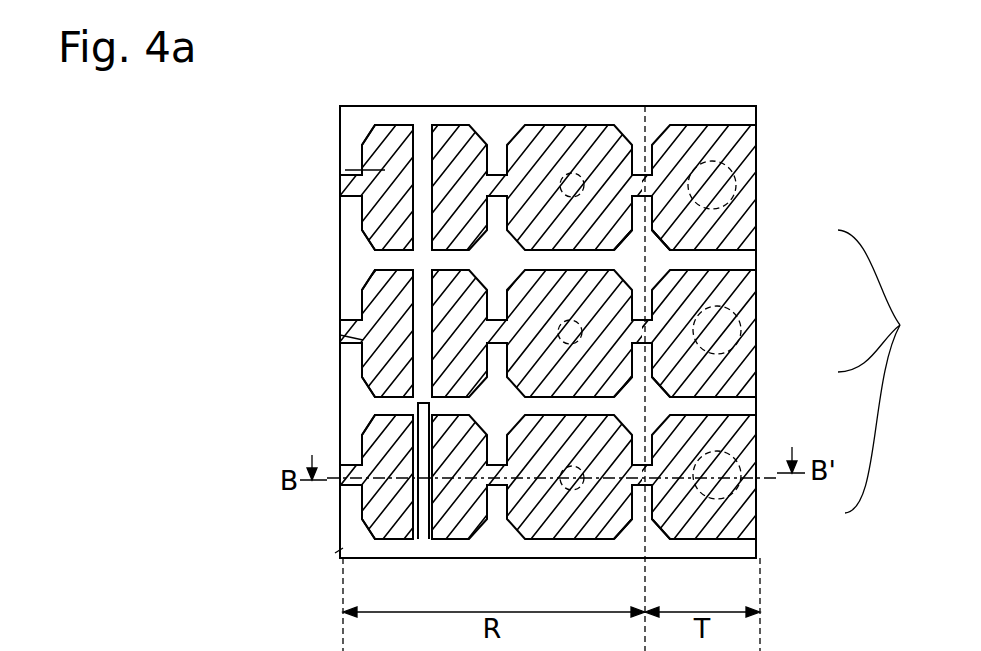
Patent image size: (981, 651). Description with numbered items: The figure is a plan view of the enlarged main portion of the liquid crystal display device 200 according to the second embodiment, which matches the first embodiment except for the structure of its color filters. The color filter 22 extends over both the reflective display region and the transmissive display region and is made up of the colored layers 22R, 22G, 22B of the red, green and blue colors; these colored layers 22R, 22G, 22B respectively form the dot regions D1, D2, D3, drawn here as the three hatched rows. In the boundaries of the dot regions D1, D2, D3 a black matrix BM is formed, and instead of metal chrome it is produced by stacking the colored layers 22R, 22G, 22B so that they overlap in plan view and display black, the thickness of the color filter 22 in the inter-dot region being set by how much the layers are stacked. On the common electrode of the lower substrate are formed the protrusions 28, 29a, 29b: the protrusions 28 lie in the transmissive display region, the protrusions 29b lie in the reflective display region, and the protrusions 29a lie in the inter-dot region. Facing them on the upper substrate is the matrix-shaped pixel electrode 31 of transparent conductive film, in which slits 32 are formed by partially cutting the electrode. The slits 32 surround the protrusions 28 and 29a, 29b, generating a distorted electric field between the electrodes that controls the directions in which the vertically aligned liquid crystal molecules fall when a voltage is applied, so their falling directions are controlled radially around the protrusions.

The liquid crystal display device 200 is at (723, 95).
The black matrix BM is at (347, 112).
The slits 32 is at (497, 135).
The pixel electrode 31 is at (727, 133).
The protrusions 28 is at (735, 177).
The protrusions 29a is at (362, 432).
The protrusions 29b is at (571, 173).
The color filter 22 is at (887, 371).
The colored layer 22B is at (383, 518).
The colored layer 22G is at (380, 227).
The colored layer 22R is at (380, 370).
The dot region D1 is at (345, 170).
The dot region D2 is at (340, 335).
The dot region D3 is at (335, 553).